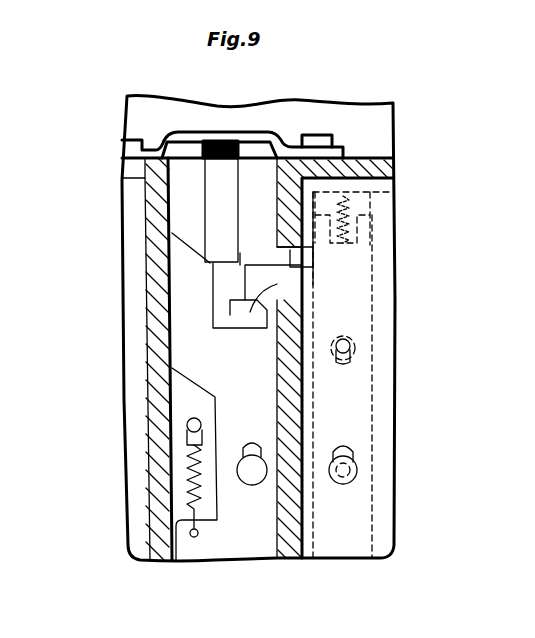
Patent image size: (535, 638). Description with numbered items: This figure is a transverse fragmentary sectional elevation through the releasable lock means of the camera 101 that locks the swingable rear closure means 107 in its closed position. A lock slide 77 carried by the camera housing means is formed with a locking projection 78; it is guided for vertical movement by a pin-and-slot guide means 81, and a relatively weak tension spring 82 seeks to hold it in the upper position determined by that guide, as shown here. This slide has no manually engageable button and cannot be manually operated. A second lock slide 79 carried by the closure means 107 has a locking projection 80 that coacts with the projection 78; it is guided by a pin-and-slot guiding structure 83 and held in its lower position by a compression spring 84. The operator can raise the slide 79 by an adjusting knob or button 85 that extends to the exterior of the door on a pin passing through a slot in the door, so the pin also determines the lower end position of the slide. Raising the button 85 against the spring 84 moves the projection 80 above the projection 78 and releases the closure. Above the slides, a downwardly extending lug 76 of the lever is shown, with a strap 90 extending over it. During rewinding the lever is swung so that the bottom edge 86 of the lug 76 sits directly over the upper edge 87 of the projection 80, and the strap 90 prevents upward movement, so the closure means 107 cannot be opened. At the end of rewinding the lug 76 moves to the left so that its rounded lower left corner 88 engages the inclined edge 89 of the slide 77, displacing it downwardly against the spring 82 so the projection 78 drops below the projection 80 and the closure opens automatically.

The camera 101 is at (113, 160).
The strap 90 is at (181, 143).
The lug 76 is at (225, 190).
The inclined edge 89 is at (190, 232).
The rounded lower left corner 88 is at (205, 258).
The bottom edge 86 is at (228, 265).
The upper edge 87 is at (313, 257).
The locking projection 80 is at (277, 284).
The compression spring 84 is at (335, 218).
The closure means 107 is at (383, 228).
The second lock slide 79 is at (345, 408).
The pin-and-slot guiding structure 83 is at (355, 353).
The adjusting knob or button 85 is at (357, 470).
The locking projection 78 is at (270, 328).
The lock slide 77 is at (233, 380).
The tension spring 82 is at (187, 474).
The pin-and-slot guide means 81 is at (253, 486).